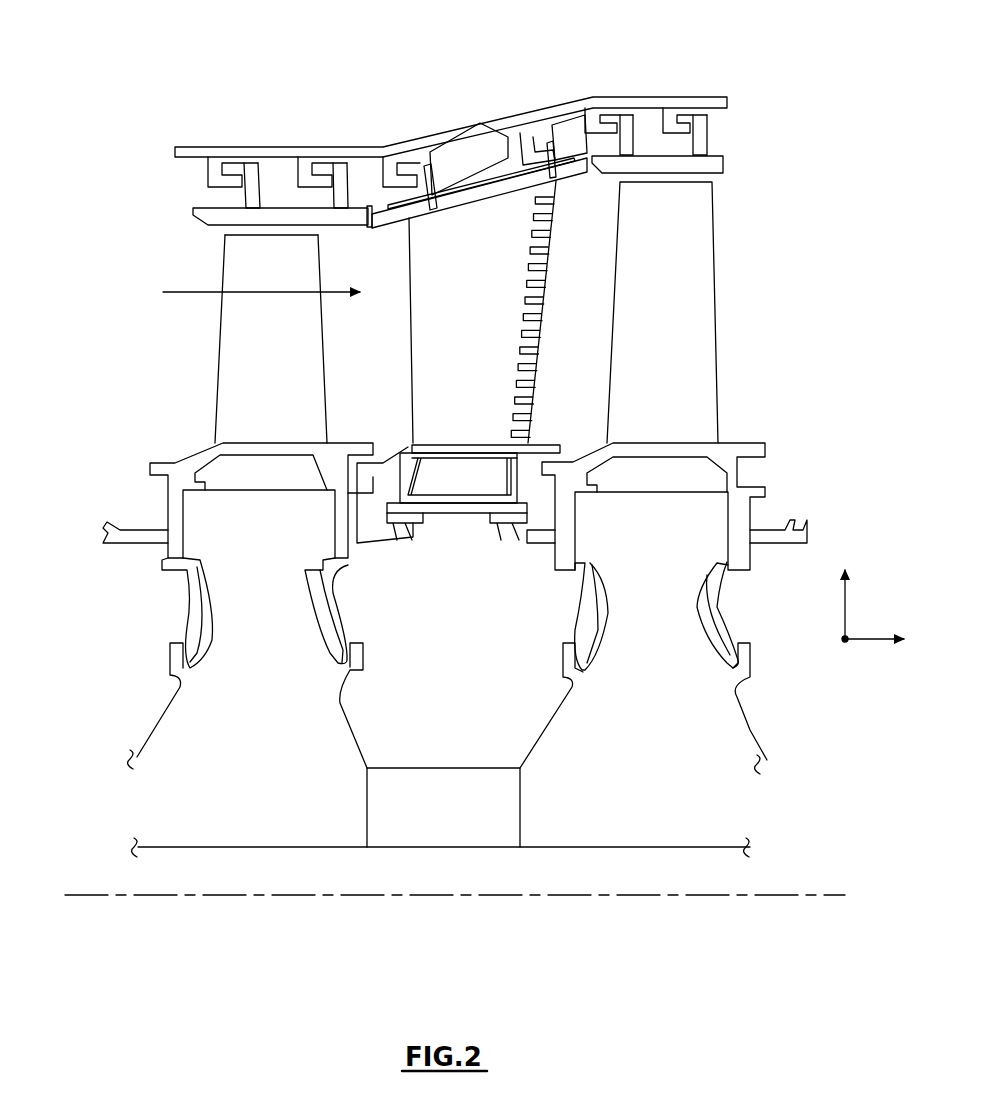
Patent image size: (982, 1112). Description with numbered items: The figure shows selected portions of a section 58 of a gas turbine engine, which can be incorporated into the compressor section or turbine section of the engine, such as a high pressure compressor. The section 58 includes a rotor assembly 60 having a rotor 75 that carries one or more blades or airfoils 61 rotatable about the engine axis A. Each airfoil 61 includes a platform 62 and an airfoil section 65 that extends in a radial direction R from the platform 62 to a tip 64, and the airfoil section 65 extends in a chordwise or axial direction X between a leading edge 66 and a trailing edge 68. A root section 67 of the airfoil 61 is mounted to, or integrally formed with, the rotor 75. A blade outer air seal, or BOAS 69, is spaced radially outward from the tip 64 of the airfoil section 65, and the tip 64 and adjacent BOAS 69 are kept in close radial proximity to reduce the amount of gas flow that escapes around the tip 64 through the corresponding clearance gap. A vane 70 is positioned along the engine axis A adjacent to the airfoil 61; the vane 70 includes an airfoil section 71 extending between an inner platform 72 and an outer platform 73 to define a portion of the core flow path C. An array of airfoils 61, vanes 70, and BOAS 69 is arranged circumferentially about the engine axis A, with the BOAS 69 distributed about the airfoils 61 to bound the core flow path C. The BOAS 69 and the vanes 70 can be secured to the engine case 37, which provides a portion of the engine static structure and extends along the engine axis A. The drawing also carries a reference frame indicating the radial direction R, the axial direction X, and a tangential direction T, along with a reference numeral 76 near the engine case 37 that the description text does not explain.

The section 58 is at (100, 90).
The engine case 37 is at (230, 146).
The case hanger hooks 76 is at (570, 76).
The blade outer air seal (BOAS) 69 is at (188, 208).
The tip 64 is at (245, 232).
The outer platform 73 is at (572, 182).
The rotor assembly 60 is at (72, 290).
The airfoil 61 is at (326, 339).
The airfoil section 65 is at (246, 344).
The leading edge 66 is at (215, 387).
The trailing edge 68 is at (328, 393).
The airfoil section 71 is at (497, 391).
The vane 70 is at (550, 309).
The platform 62 is at (165, 456).
The root section 67 is at (203, 537).
The inner platform 72 is at (545, 443).
The rotor 75 is at (145, 737).
The engine axis A is at (810, 895).
The core flow path C is at (175, 294).
The radial direction R is at (858, 596).
The axial direction X is at (885, 639).
The tangential direction T is at (845, 640).